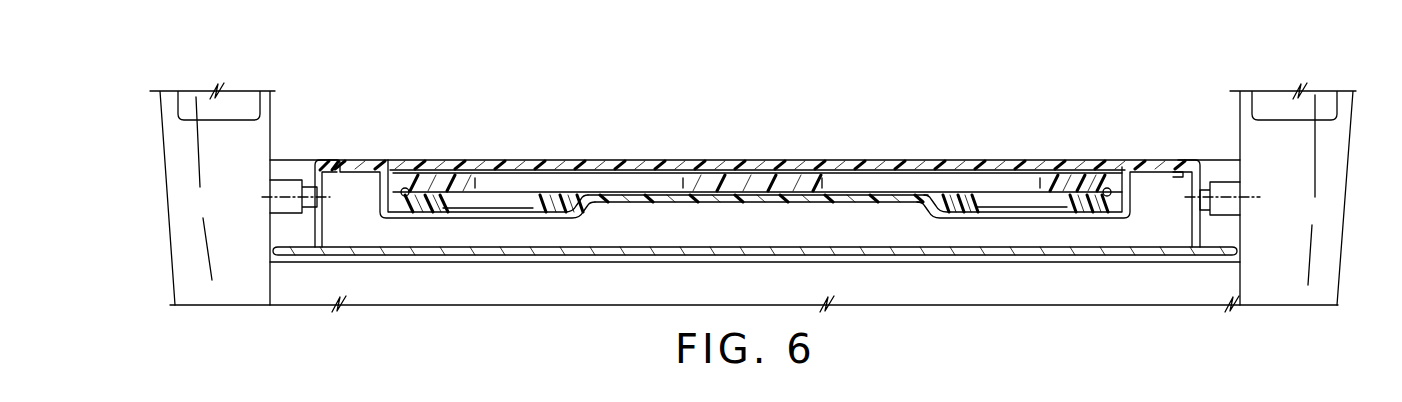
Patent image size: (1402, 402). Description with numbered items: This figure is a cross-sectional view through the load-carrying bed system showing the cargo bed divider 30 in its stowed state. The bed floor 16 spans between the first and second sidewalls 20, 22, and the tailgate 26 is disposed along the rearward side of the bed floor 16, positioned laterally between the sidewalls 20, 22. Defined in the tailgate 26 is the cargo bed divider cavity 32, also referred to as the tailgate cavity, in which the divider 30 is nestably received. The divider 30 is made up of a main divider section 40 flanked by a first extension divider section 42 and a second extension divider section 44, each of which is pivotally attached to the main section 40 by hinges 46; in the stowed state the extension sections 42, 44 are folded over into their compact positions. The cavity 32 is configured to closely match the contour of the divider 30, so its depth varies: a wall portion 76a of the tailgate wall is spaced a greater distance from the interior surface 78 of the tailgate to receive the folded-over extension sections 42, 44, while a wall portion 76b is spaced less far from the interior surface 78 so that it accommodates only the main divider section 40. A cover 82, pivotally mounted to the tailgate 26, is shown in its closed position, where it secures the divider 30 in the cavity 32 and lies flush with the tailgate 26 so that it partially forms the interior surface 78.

The bed floor 16 is at (1216, 153).
The first sidewall 20 is at (272, 107).
The second sidewall 22 is at (1242, 107).
The tailgate 26 is at (524, 266).
The cargo bed divider 30 is at (804, 165).
The cargo bed divider cavity 32 is at (1118, 202).
The main divider section 40 is at (732, 182).
The first extension divider section 42 is at (435, 203).
The second extension divider section 44 is at (968, 205).
The hinges 46 is at (403, 188).
The tailgate wall portion 76a is at (540, 212).
The tailgate wall portion 76b is at (725, 197).
The interior surface 78 is at (350, 160).
The cover 82 is at (910, 167).